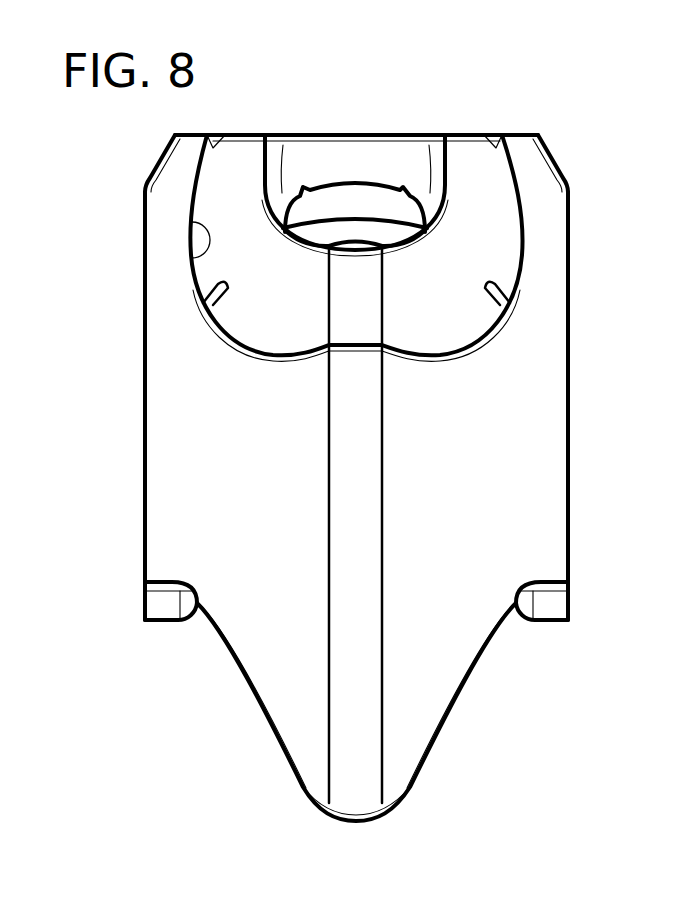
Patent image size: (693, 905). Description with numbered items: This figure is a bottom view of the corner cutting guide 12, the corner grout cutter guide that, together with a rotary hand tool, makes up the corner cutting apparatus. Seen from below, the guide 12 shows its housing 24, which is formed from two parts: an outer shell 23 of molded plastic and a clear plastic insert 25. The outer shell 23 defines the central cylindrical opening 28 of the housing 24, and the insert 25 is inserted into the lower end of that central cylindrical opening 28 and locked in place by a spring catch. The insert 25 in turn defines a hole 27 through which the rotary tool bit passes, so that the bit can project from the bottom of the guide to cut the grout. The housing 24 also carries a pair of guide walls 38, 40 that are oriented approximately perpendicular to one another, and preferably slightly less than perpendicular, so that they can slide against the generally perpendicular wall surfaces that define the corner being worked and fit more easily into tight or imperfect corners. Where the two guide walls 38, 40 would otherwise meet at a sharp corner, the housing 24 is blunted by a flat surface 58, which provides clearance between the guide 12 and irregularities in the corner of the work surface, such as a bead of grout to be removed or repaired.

The corner cutting guide 12 is at (588, 205).
The outer shell 23 is at (547, 312).
The housing 24 is at (143, 437).
The insert 25 is at (498, 243).
The hole 27 is at (339, 216).
The central cylindrical opening 28 is at (190, 260).
The guide wall 38 is at (542, 460).
The guide wall 40 is at (195, 542).
The flat surface 58 is at (355, 765).